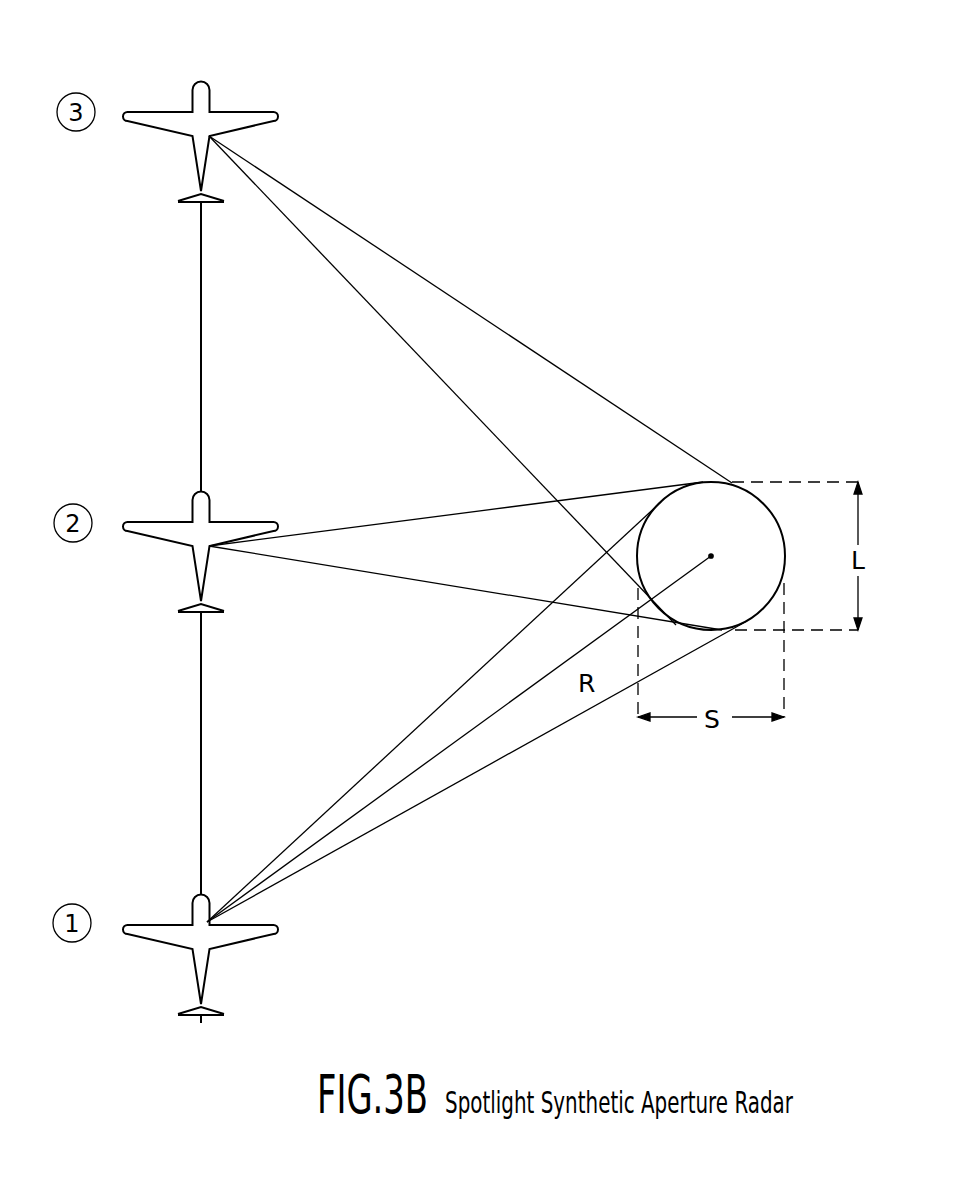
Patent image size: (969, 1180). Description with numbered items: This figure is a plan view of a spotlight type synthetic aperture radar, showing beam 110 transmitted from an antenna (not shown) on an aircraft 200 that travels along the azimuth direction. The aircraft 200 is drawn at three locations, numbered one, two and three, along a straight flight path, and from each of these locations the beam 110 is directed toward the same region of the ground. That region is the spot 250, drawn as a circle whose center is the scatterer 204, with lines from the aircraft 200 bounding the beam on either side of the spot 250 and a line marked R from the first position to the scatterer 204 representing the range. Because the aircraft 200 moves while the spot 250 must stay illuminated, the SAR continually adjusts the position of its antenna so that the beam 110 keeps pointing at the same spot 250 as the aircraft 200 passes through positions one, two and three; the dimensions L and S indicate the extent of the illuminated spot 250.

The beam 110 is at (545, 358).
The aircraft 200 is at (240, 938).
The scatterer 204 is at (712, 558).
The spot 250 is at (727, 482).